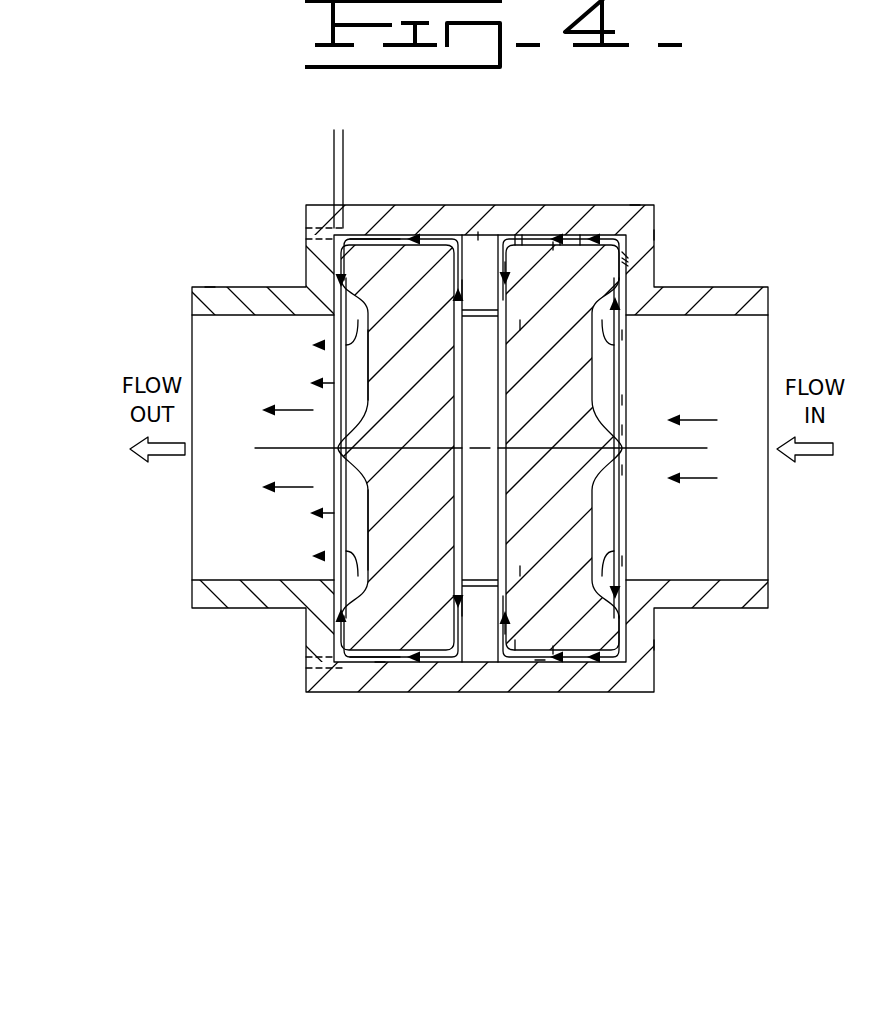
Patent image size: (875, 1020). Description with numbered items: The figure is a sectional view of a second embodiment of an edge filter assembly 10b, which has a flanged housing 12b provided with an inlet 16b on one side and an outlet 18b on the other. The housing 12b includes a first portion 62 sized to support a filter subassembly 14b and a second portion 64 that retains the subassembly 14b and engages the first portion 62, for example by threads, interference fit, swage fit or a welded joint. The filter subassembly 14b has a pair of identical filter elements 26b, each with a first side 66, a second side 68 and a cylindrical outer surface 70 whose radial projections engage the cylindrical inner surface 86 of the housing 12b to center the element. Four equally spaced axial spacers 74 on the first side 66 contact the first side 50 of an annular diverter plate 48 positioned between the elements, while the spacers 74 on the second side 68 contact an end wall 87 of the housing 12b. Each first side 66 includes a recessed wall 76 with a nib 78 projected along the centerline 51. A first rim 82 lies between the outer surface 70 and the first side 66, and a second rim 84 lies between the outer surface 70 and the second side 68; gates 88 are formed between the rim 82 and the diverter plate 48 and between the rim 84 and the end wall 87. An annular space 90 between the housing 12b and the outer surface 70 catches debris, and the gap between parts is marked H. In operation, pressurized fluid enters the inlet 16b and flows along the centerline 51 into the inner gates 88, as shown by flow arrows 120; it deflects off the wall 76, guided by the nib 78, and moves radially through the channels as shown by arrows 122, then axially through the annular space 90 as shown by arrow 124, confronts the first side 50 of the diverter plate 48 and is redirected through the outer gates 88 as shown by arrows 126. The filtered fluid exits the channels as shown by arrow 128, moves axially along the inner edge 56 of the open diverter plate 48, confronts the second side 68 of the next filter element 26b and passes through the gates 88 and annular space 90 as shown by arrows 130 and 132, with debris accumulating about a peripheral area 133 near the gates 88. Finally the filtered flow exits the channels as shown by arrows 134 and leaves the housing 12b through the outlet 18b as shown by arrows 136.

The edge filter assembly 10b is at (511, 158).
The flanged housing 12b is at (610, 692).
The filter subassembly 14b is at (372, 237).
The inlet 16b is at (770, 318).
The outlet 18b is at (207, 322).
The filter element 26b is at (380, 663).
The diverter plate 48 is at (478, 232).
The first side 50 is at (515, 235).
The centerline 51 is at (707, 448).
The inner edge 56 is at (470, 489).
The first portion 62 is at (633, 205).
The second portion 64 is at (210, 287).
The first side 66 is at (498, 397).
The second side 68 is at (628, 400).
The outer surface 70 is at (580, 235).
The spacers 74 is at (489, 240).
The recessed wall 76 is at (625, 470).
The nib 78 is at (628, 430).
The first rim 82 is at (560, 235).
The second rim 84 is at (625, 260).
The cylindrical inner surface 86 is at (522, 235).
The end wall 87 is at (625, 263).
The gates 88 is at (500, 290).
The annular space 90 is at (540, 660).
The flow arrows 120 is at (633, 365).
The arrows 122 is at (648, 230).
The arrow 124 is at (553, 244).
The arrows 126 is at (508, 262).
The arrow 128 is at (520, 322).
The arrows 130 is at (445, 358).
The arrows 132 is at (422, 238).
The peripheral area 133 is at (625, 255).
The arrows 134 is at (341, 280).
The arrows 136 is at (325, 343).
The gap height H is at (373, 140).